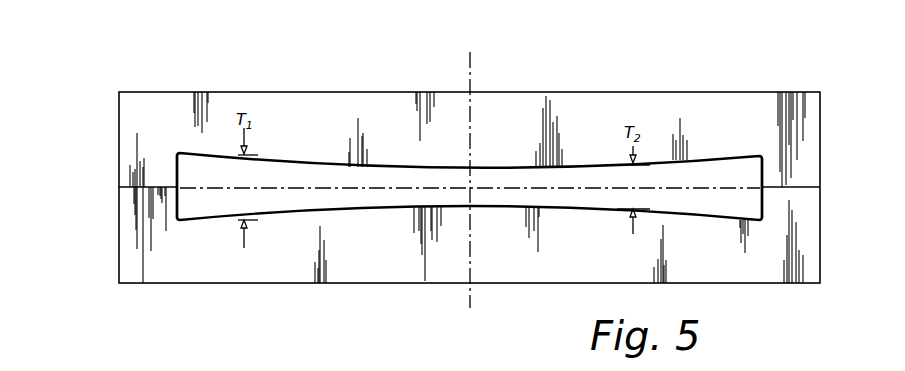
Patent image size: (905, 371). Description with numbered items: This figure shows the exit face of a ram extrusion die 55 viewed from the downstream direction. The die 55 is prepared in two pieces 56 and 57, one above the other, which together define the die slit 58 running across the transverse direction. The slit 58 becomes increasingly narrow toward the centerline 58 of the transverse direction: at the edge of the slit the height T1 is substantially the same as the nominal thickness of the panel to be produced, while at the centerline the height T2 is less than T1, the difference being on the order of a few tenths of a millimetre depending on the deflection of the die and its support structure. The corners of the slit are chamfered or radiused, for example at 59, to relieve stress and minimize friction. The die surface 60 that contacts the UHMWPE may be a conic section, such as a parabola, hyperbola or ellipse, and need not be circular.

The die 55 is at (90, 108).
The die piece 56 is at (119, 145).
The die piece 57 is at (119, 240).
The die slit 58 is at (262, 177).
The chamfered or radiused corner 59 is at (177, 153).
The die surface 60 is at (707, 157).